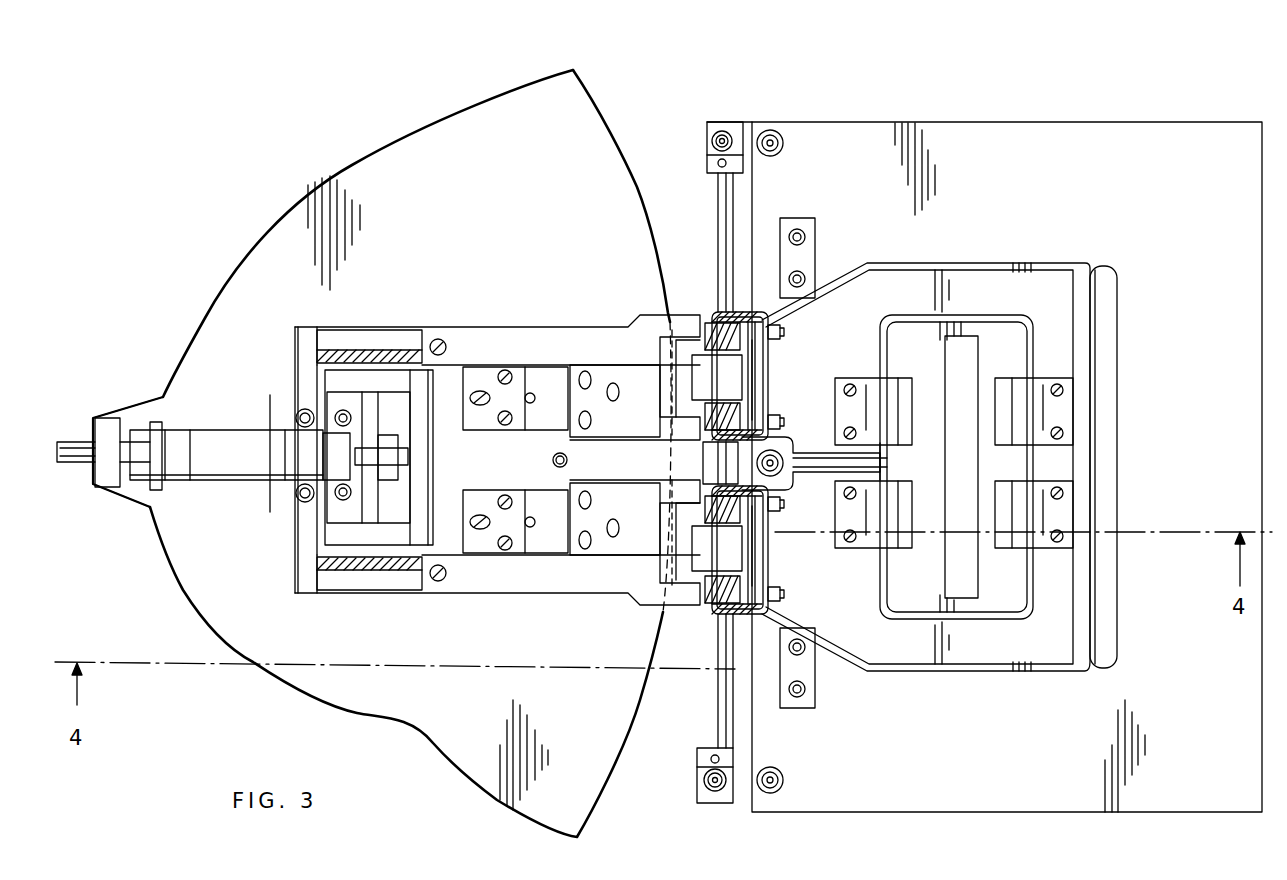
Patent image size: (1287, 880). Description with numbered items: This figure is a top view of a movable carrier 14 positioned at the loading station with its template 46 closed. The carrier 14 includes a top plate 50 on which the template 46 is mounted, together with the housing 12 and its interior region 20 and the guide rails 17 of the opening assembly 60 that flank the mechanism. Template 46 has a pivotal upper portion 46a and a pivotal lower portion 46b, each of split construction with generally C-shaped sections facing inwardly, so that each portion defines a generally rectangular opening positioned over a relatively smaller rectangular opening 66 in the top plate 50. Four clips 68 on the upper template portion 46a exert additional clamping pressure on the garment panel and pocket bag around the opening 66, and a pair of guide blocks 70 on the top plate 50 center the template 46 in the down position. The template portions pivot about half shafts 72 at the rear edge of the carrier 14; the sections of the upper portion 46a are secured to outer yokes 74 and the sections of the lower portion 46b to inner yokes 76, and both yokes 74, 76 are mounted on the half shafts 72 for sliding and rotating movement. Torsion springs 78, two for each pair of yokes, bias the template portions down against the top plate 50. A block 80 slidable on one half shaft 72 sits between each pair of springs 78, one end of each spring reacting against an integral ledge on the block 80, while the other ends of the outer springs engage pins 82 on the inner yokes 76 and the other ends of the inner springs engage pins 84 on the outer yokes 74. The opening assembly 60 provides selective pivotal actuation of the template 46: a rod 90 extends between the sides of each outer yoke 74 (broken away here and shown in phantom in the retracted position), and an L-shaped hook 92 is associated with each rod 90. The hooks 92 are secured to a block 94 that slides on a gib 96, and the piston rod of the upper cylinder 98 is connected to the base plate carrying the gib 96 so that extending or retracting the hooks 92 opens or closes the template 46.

The housing 12 is at (610, 112).
The carrier 14 is at (1142, 124).
The guide rail 17 is at (358, 345).
The housing interior 20 is at (440, 205).
The template 46 is at (981, 437).
The upper template portion 46a is at (1020, 285).
The lower template portion 46b is at (1100, 315).
The top plate 50 is at (1192, 187).
The opening assembly 60 is at (497, 439).
The opening 66 is at (950, 578).
The clips 68 is at (898, 388).
The guide blocks 70 is at (805, 255).
The half shafts 72 is at (722, 228).
The outer yokes 74 is at (770, 375).
The inner yokes 76 is at (755, 385).
The torsion springs 78 is at (720, 325).
The block 80 is at (715, 375).
The pins 82 is at (778, 335).
The pins 84 is at (778, 422).
The rod 90 is at (665, 350).
The L-shaped hook 92 is at (650, 330).
The block 94 is at (505, 465).
The gib 96 is at (530, 565).
The upper cylinder 98 is at (232, 440).